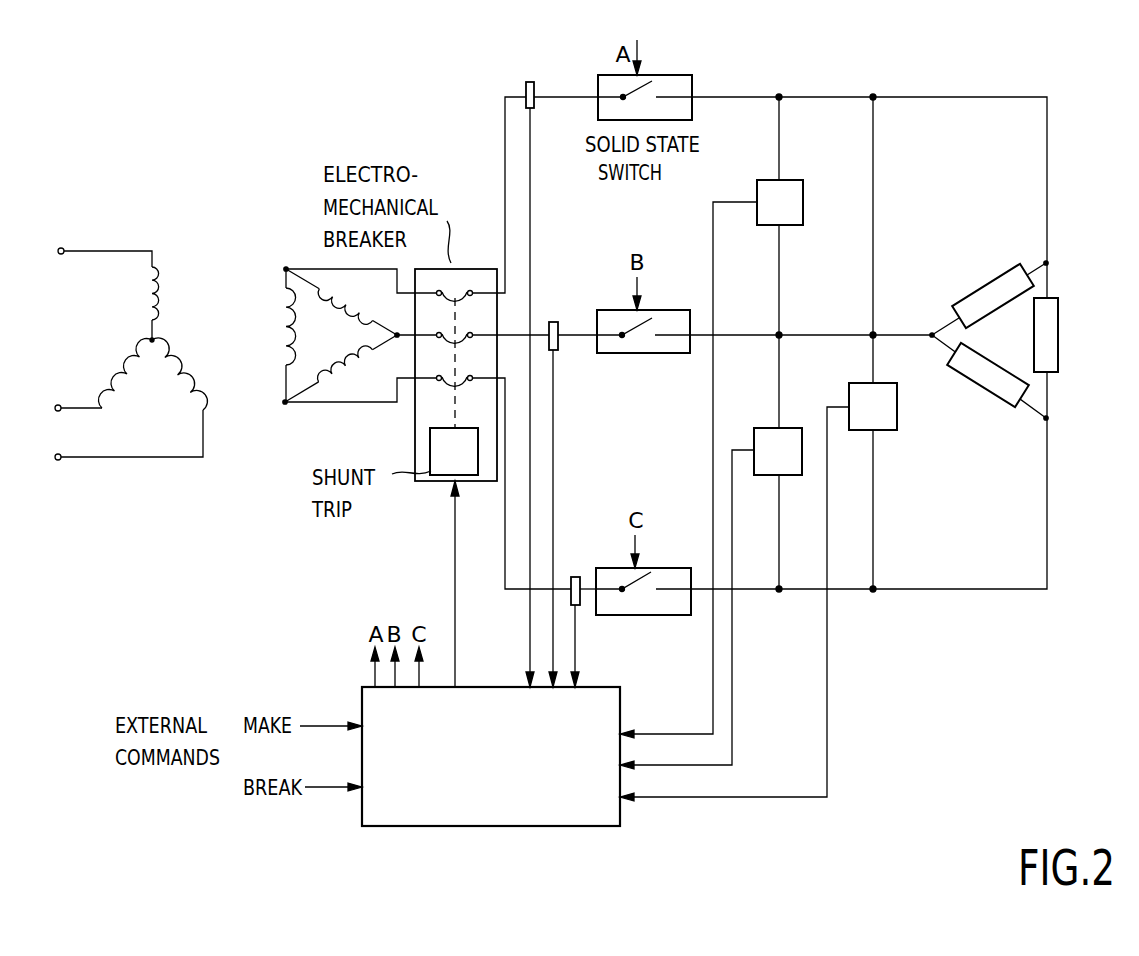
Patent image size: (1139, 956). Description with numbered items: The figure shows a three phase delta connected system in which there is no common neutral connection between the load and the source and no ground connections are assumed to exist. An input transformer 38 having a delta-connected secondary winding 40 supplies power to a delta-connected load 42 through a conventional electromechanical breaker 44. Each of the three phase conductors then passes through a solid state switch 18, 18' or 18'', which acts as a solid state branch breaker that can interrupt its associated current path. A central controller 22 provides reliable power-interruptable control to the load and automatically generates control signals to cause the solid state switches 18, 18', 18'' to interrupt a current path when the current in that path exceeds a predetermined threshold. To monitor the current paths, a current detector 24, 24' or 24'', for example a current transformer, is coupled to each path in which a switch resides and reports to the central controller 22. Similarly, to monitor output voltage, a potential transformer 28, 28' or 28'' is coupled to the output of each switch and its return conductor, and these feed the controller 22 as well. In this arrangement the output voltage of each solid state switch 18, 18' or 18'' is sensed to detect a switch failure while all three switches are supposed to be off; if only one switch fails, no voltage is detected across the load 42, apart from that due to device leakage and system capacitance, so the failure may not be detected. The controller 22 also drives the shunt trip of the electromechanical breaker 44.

The solid state switch 18 is at (675, 84).
The solid state switch 18' is at (651, 298).
The solid state switch 18'' is at (657, 559).
The central controller 22 is at (622, 815).
The current detector 24 is at (501, 360).
The current detector 24' is at (568, 464).
The current detector 24'' is at (592, 590).
The potential transformer 28 is at (786, 592).
The potential transformer 28' is at (725, 568).
The potential transformer 28'' is at (739, 459).
The input transformer 38 is at (180, 319).
The delta-connected secondary winding 40 is at (288, 292).
The delta-connected load 42 is at (1048, 272).
The electromechanical breaker 44 is at (495, 483).